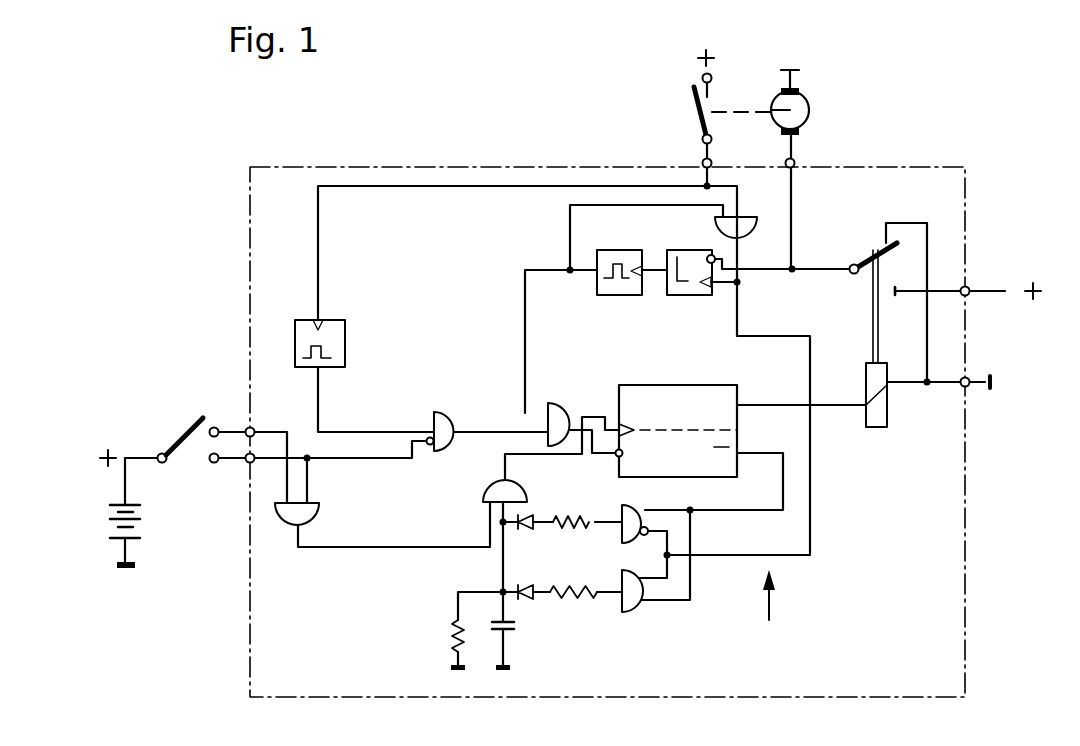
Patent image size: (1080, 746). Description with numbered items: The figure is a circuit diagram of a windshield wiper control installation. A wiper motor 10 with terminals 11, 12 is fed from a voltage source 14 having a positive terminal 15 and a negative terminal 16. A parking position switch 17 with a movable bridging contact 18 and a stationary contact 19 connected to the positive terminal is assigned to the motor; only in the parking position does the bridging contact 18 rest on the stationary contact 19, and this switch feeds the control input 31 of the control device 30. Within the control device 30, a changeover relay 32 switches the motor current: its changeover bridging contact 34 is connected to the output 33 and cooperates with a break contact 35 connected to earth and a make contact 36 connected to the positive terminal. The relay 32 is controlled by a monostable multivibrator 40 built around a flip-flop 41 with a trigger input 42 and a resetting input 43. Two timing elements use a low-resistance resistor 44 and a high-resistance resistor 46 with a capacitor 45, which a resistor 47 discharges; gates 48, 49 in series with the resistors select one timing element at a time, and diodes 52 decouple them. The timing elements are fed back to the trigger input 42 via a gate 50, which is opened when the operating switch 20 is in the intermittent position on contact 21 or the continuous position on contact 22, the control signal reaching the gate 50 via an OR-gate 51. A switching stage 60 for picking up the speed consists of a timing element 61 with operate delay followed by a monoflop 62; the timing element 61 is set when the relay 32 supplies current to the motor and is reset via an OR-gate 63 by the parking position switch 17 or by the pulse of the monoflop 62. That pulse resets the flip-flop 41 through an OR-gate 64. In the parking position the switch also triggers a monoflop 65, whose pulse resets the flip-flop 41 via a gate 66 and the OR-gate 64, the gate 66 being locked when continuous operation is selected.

The wiper motor 10 is at (808, 107).
The terminal 11 is at (799, 92).
The terminal 12 is at (799, 135).
The voltage source 14 is at (107, 524).
The positive terminal 15 is at (970, 288).
The negative terminal 16 is at (969, 388).
The parking position switch 17 is at (682, 83).
The movable bridging contact 18 is at (688, 103).
The stationary contact 19 is at (688, 73).
The operating switch 20 is at (170, 432).
The contact 21 is at (213, 426).
The contact 22 is at (212, 463).
The control device 30 is at (433, 278).
The control input 31 is at (703, 161).
The changeover relay 32 is at (879, 430).
The output 33 is at (795, 167).
The changeover bridging contact 34 is at (885, 252).
The break contact 35 is at (885, 236).
The make contact 36 is at (895, 298).
The monostable multivibrator 40 is at (783, 601).
The flip-flop 41 is at (677, 412).
The trigger input 42 is at (638, 428).
The resetting input 43 is at (624, 453).
The low-resistance resistor 44 is at (585, 602).
The capacitor 45 is at (513, 630).
The high-resistance resistor 46 is at (580, 513).
The resistor 47 is at (450, 637).
The gate 48 is at (645, 506).
The gate 49 is at (640, 605).
The gate 50 is at (548, 481).
The OR-gate 51 is at (318, 513).
The diodes 52 is at (535, 586).
The switching stage 60 is at (656, 273).
The timing element 61 is at (690, 296).
The monoflop 62 is at (618, 296).
The OR-gate 63 is at (750, 227).
The OR-gate 64 is at (553, 402).
The monoflop 65 is at (336, 346).
The gate 66 is at (440, 452).